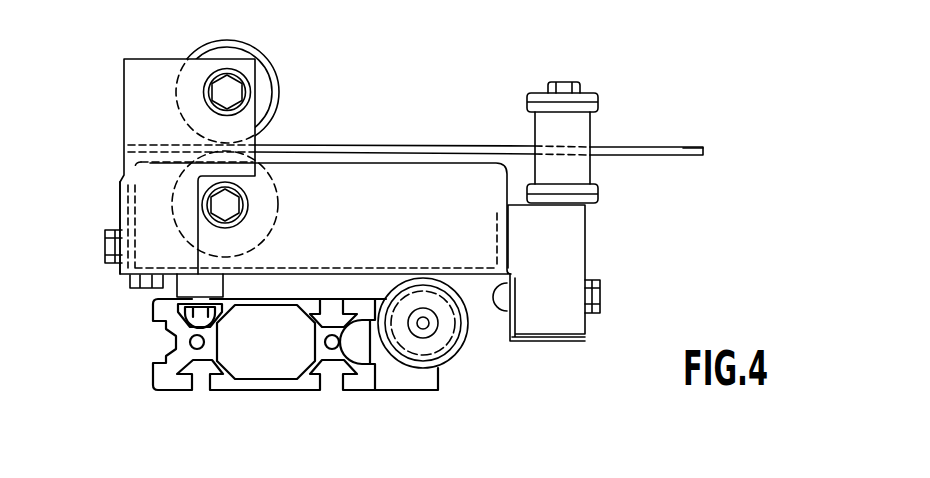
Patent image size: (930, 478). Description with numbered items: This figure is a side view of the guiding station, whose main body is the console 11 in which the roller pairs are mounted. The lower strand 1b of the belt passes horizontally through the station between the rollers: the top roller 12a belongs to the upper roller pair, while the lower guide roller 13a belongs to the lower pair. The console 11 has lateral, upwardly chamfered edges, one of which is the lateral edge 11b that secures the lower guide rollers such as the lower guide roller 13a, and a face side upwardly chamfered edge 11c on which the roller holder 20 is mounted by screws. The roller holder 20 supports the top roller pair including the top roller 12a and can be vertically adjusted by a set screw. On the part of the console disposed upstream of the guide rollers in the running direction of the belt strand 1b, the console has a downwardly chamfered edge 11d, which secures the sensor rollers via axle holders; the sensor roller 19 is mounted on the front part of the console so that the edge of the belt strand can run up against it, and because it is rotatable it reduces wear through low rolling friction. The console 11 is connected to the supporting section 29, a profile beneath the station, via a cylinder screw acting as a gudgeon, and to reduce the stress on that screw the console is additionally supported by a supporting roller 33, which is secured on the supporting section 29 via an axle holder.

The console 11 is at (376, 268).
The lateral upwardly chamfered edge 11b is at (430, 162).
The face side upwardly chamfered edge 11c is at (121, 178).
The downwardly chamfered edge 11d is at (517, 340).
The top roller 12a is at (275, 67).
The lower guide roller 13a is at (273, 182).
The sensor roller 19 is at (593, 128).
The lower strand of belt 1b is at (683, 148).
The roller holder 20 is at (124, 86).
The supporting section 29 is at (155, 358).
The supporting roller 33 is at (457, 360).